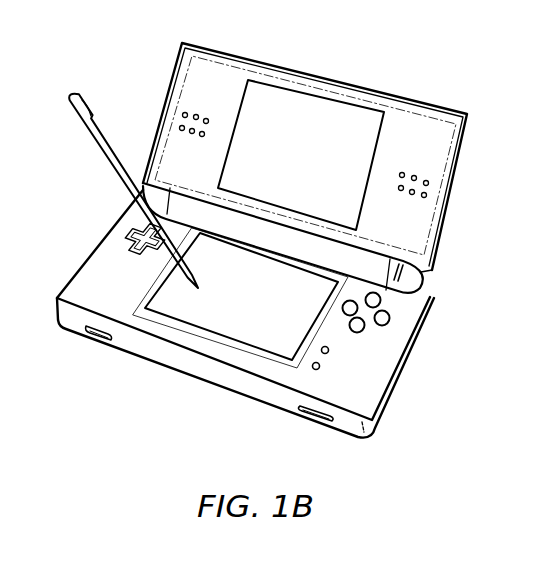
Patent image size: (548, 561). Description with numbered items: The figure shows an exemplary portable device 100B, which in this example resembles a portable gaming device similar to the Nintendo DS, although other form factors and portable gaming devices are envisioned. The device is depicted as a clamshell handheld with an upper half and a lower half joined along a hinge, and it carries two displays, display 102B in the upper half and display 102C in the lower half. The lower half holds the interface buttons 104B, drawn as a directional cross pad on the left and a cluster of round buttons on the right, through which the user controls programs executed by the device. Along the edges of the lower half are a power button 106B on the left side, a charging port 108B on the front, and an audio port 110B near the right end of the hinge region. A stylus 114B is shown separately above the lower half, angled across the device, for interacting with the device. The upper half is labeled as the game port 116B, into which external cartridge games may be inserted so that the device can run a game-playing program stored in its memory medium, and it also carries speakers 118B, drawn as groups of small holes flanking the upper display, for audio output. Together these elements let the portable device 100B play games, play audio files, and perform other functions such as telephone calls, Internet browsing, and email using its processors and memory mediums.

The portable device 100B is at (344, 54).
The display 102B is at (367, 120).
The display 102C is at (238, 335).
The interface buttons 104B is at (107, 232).
The power button 106B is at (95, 339).
The charging port 108B is at (314, 414).
The audio port 110B is at (431, 297).
The stylus 114B is at (90, 139).
The game port 116B is at (130, 128).
The speakers 118B is at (428, 184).